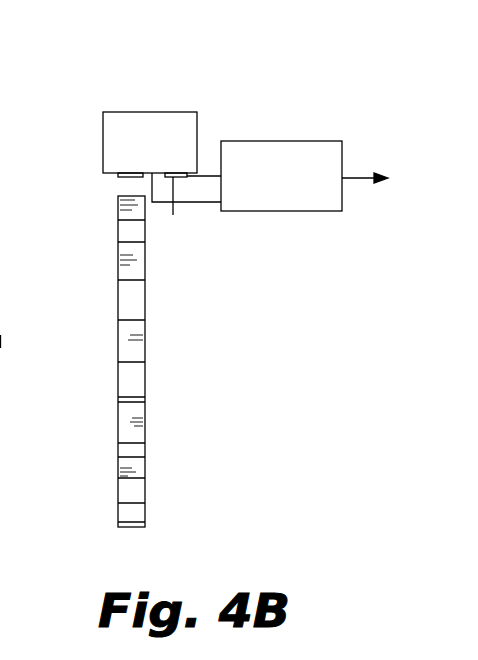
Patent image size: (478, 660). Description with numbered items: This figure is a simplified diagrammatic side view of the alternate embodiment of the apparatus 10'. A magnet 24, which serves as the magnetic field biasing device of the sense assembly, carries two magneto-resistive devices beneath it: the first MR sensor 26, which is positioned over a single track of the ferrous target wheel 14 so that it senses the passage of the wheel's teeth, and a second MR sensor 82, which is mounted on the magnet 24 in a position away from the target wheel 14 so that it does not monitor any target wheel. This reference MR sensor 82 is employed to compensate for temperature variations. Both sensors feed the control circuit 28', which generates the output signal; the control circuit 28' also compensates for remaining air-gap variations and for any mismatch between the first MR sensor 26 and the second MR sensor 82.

The apparatus 10' is at (228, 272).
The magnet 24 is at (103, 117).
The magneto-resistive magnetic field sensor 26 is at (118, 177).
The second MR sensor 82 is at (173, 215).
The ferrous target wheel 14 is at (148, 305).
The control circuit 28' is at (294, 138).